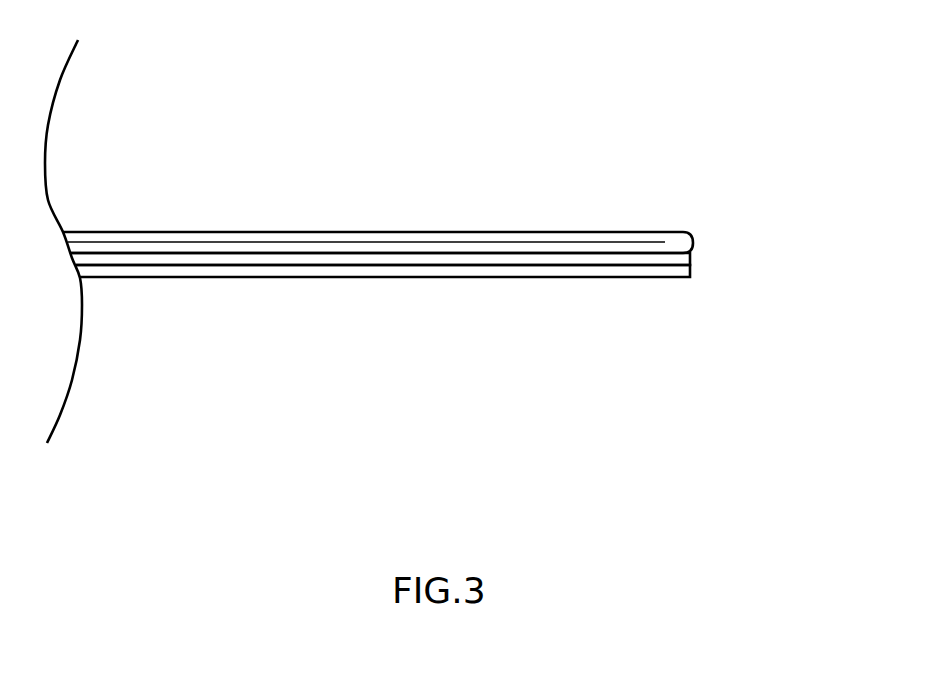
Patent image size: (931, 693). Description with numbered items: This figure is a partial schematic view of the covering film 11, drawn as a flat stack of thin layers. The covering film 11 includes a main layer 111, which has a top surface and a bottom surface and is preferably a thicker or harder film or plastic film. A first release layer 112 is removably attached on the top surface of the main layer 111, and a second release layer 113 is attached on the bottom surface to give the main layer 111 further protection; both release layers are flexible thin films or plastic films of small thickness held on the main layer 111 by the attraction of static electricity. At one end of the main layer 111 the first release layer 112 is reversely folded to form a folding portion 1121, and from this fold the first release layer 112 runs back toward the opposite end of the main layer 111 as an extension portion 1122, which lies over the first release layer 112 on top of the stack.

The covering film 11 is at (470, 205).
The main layer 111 is at (690, 258).
The first release layer 112 is at (431, 179).
The second release layer 113 is at (690, 272).
The folding portion 1121 is at (679, 220).
The extension portion 1122 is at (345, 224).